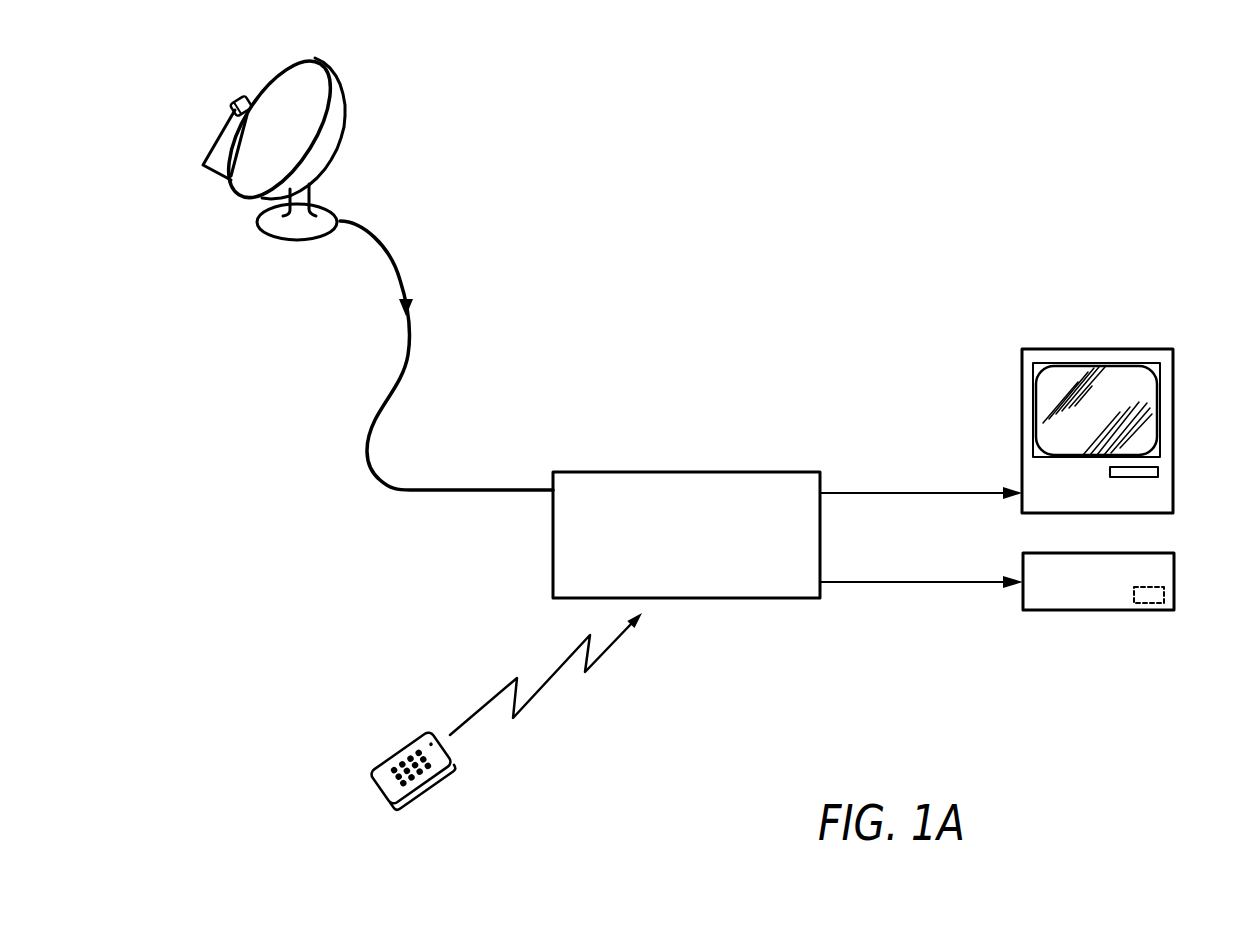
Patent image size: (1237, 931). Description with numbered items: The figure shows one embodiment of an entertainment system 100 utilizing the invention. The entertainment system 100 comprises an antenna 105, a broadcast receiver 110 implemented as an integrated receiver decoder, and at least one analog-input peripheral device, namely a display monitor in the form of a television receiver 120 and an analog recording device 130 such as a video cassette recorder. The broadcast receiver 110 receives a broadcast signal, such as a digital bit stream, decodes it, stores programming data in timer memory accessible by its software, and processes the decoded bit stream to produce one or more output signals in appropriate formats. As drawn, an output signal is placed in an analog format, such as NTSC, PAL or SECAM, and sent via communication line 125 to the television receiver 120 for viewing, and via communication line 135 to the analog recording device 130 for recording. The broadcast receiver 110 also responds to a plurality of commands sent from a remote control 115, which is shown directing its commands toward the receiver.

The entertainment system 100 is at (288, 617).
The antenna 105 is at (362, 87).
The broadcast receiver 110 is at (733, 468).
The remote control 115 is at (442, 777).
The television receiver 120 is at (1107, 348).
The communication line 125 is at (898, 493).
The analog recording device 130 is at (1118, 553).
The communication line 135 is at (897, 584).